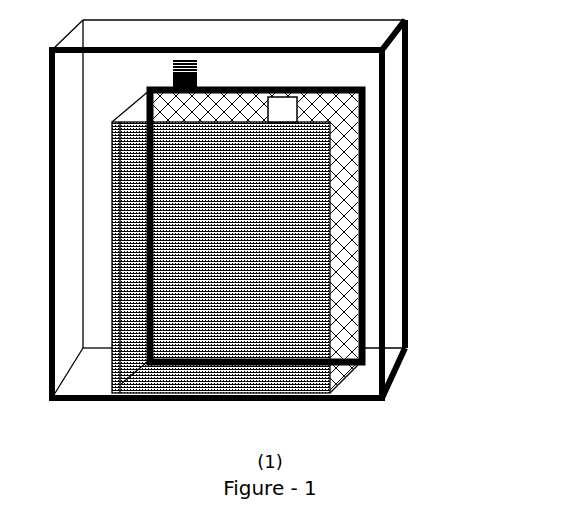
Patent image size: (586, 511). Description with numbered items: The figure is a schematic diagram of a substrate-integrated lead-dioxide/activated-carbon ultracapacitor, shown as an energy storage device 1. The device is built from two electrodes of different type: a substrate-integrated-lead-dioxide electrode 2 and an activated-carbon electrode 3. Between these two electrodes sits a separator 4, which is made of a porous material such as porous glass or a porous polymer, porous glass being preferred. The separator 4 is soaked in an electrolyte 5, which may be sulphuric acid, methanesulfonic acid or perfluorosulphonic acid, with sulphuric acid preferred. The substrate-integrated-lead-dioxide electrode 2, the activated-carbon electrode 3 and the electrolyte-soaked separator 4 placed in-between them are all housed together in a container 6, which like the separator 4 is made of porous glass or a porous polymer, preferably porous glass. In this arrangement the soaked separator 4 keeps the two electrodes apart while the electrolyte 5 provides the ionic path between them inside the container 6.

The energy storage device 1 is at (405, 287).
The substrate-integrated-lead-dioxide electrode 2 is at (323, 144).
The activated-carbon electrode 3 is at (365, 255).
The separator 4 is at (348, 196).
The electrolyte 5 is at (197, 62).
The container 6 is at (297, 110).